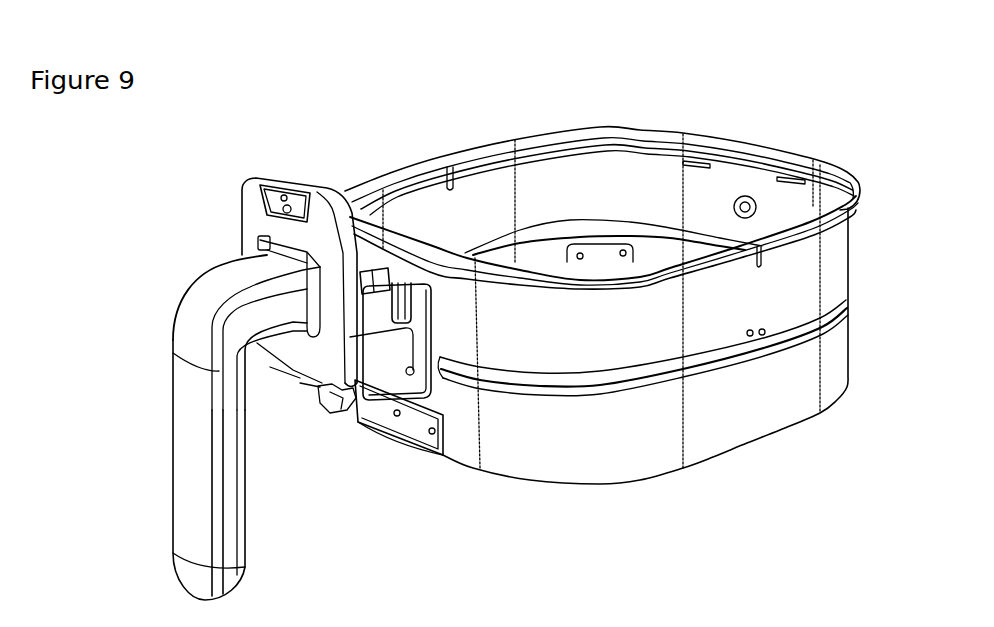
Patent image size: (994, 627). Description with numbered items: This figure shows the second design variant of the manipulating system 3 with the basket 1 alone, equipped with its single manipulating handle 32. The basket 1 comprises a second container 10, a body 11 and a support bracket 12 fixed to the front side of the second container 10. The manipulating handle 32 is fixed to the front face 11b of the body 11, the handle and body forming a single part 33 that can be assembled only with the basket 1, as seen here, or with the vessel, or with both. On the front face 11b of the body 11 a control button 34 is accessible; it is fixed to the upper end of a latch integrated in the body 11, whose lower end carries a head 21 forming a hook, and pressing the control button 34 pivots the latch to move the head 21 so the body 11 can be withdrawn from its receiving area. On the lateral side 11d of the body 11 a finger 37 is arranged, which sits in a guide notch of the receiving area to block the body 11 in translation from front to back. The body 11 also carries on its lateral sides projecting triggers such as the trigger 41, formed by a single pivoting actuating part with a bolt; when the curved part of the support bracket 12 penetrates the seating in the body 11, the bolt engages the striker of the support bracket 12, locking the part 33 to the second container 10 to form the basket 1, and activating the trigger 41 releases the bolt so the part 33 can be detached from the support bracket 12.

The basket 1 is at (824, 78).
The second container 10 is at (853, 250).
The body 11 is at (245, 174).
The front face 11b is at (256, 228).
The lateral side 11d is at (391, 368).
The support bracket 12 is at (431, 287).
The head 21 is at (330, 410).
The manipulating system 3 is at (381, 405).
The manipulating handle 32 is at (172, 438).
The part 33 is at (187, 264).
The control button 34 is at (291, 178).
The finger 37 is at (411, 300).
The trigger 41 is at (390, 270).